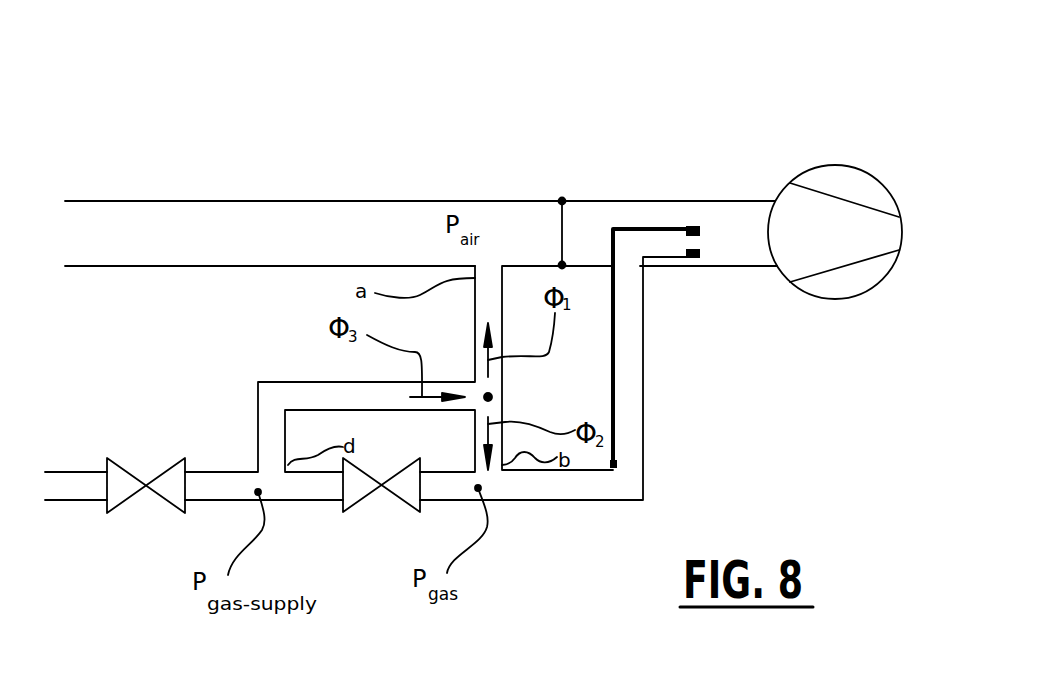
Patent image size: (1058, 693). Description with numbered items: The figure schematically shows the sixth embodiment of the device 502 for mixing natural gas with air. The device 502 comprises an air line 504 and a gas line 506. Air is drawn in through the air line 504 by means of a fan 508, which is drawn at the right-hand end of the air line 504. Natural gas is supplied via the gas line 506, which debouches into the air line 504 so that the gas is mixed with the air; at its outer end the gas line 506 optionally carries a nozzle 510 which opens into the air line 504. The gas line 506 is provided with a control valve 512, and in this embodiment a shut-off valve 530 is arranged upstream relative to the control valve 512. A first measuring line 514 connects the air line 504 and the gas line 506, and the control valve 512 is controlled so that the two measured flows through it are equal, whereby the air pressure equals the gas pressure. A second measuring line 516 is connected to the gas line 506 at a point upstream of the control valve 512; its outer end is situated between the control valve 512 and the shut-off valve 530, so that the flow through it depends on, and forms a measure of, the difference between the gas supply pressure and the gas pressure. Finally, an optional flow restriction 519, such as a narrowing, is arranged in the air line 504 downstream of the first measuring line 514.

The device 502 is at (558, 150).
The air line 504 is at (237, 201).
The gas line 506 is at (550, 502).
The fan 508 is at (848, 166).
The nozzle 510 is at (697, 223).
The control valve 512 is at (365, 490).
The first measuring line 514 is at (540, 397).
The second measuring line 516 is at (307, 382).
The flow restriction 519 is at (563, 200).
The shut-off valve 530 is at (123, 497).